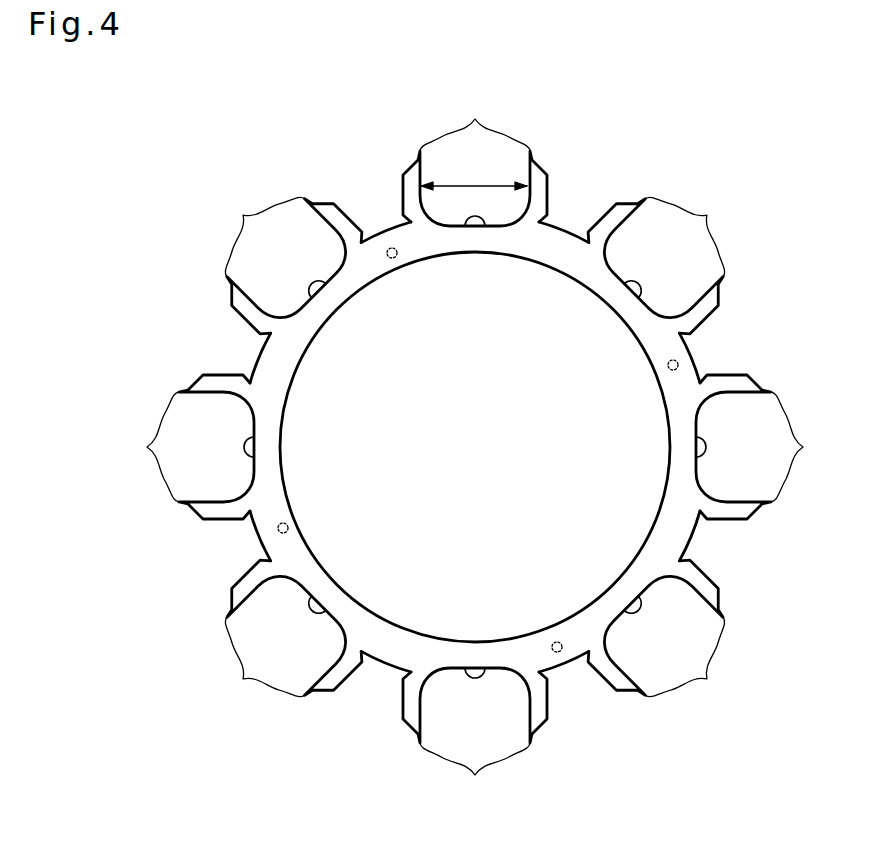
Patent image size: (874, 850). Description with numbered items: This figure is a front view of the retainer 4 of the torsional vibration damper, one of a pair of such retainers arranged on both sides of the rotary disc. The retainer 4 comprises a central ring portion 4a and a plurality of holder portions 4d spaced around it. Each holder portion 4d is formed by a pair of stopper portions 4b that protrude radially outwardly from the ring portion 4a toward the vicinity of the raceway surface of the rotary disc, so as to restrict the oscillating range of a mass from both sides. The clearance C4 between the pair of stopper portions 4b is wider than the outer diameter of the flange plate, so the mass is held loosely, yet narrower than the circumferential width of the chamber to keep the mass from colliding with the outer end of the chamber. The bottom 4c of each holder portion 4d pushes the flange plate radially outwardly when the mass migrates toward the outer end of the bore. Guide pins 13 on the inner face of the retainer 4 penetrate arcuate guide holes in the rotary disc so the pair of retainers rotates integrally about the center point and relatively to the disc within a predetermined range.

The retainer 4 is at (614, 132).
The ring portion 4a is at (557, 258).
The stopper portion 4b is at (475, 123).
The bottom of the holder portion 4c is at (476, 231).
The holder portion 4d is at (514, 132).
The guide pin 13 is at (393, 259).
The clearance between the pair of stopper portions C4 is at (474, 173).